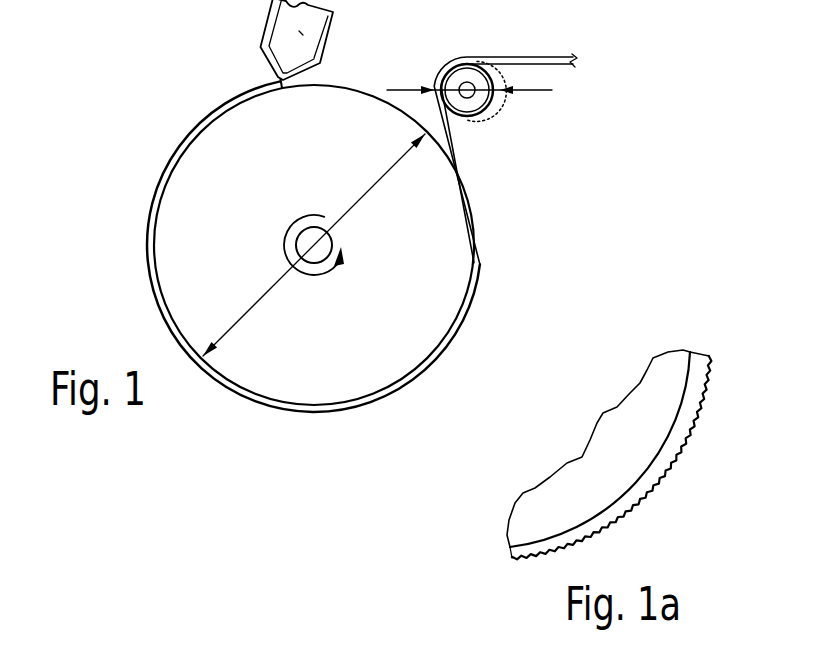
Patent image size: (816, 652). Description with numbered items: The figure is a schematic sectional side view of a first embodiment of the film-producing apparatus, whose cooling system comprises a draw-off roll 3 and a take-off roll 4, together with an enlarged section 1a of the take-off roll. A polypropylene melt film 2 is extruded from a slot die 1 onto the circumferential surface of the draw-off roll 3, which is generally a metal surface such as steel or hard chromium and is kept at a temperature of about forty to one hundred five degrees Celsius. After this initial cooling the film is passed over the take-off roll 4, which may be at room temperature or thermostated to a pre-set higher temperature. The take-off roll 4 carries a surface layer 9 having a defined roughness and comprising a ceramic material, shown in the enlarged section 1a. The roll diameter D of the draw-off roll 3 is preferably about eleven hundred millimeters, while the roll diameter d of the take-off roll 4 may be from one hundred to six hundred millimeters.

In FIG. 1, the slot die 1 is at (282, 25).
In FIG. 1, the detail region of roller 1a is at (448, 115).
In FIG. 1, the melt film 2 is at (160, 186).
In FIG. 1, the draw-off roll 3 is at (205, 148).
In FIG. 1, the take-off roll 4 is at (467, 72).
In FIG. 1A, the take-off roll 4 is at (617, 410).
In FIG. 1, the surface layer 9 is at (496, 100).
In FIG. 1A, the surface layer 9 is at (676, 427).
In FIG. 1, the roll diameter of the draw-off roll D is at (357, 195).
In FIG. 1, the roll diameter of the take-off roll d is at (469, 74).